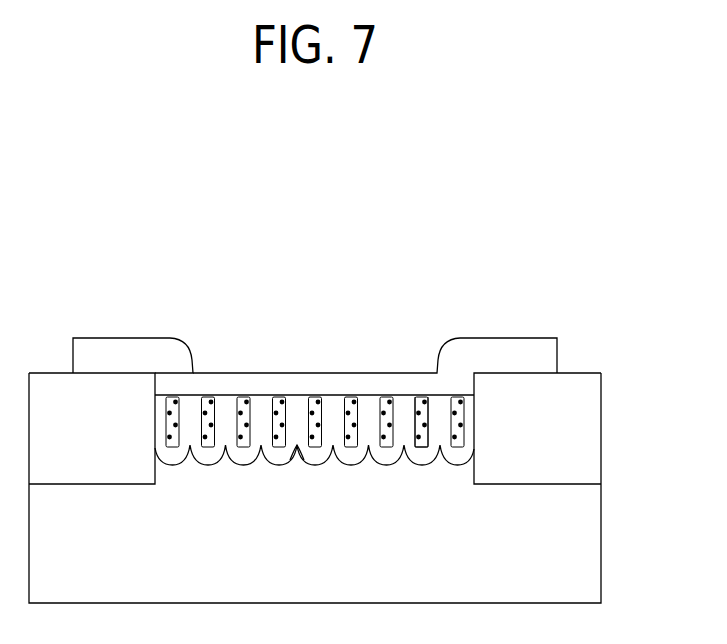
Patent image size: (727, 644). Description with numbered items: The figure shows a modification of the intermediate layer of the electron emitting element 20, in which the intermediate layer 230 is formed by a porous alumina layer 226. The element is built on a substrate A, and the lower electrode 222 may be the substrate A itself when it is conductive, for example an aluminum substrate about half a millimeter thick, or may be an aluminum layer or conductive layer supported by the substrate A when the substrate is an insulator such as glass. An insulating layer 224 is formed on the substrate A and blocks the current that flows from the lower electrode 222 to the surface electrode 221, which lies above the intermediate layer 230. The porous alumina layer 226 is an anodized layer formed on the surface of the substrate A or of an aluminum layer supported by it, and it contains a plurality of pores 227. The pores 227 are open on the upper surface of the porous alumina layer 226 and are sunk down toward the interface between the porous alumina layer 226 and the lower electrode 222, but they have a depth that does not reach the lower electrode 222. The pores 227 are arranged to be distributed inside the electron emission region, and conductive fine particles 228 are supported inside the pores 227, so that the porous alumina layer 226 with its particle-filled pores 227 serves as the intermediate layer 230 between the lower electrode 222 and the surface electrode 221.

The electron emitting element 20 is at (347, 428).
The surface electrode 221 is at (548, 357).
The lower electrode 222 is at (208, 467).
The insulating layer 224 is at (592, 453).
The porous alumina layer 226 is at (347, 466).
The pores 227 is at (348, 448).
The conductive fine particles 228 is at (418, 449).
The intermediate layer 230 is at (295, 467).
The substrate A is at (592, 555).